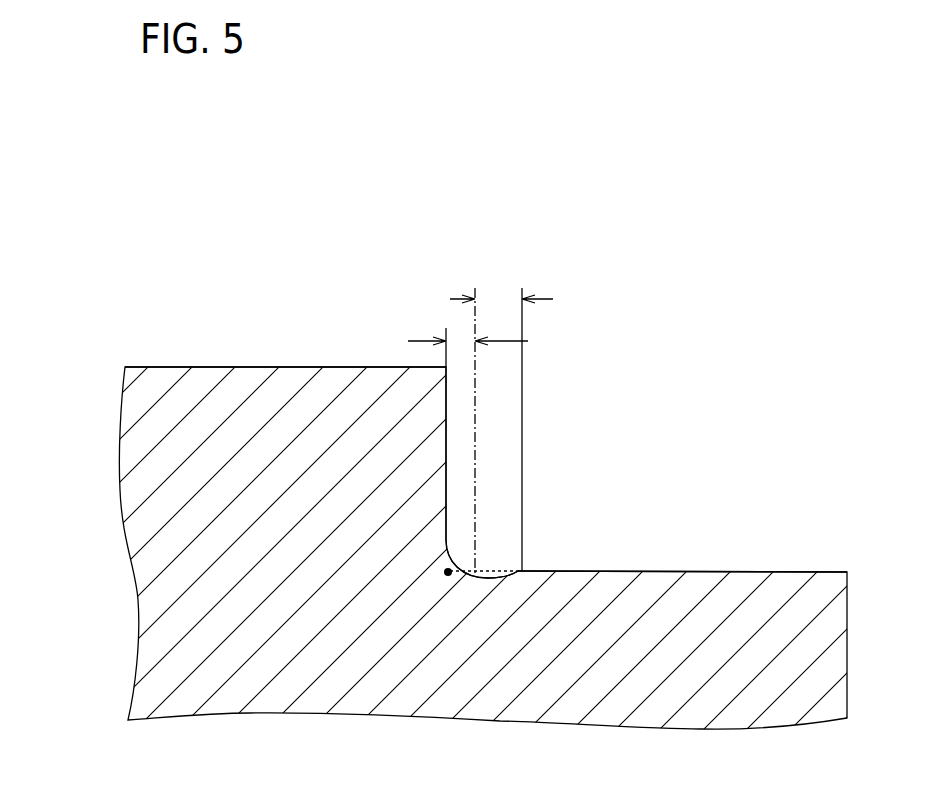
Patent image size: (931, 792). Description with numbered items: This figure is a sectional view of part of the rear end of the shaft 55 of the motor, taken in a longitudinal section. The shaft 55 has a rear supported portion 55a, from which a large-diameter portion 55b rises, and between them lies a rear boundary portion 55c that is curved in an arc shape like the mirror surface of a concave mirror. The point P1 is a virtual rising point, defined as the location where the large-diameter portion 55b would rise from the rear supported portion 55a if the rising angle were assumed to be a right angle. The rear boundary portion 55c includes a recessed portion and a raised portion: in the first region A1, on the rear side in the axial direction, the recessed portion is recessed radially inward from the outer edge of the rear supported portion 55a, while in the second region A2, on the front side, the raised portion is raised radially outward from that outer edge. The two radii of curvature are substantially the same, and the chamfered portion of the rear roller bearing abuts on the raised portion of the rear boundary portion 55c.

The shaft 55 is at (703, 557).
The rear supported portion 55a is at (569, 571).
The large-diameter portion 55b is at (204, 367).
The rear boundary portion 55c is at (447, 557).
The virtual rising point P1 is at (448, 574).
The first region A1 is at (501, 300).
The second region A2 is at (468, 327).